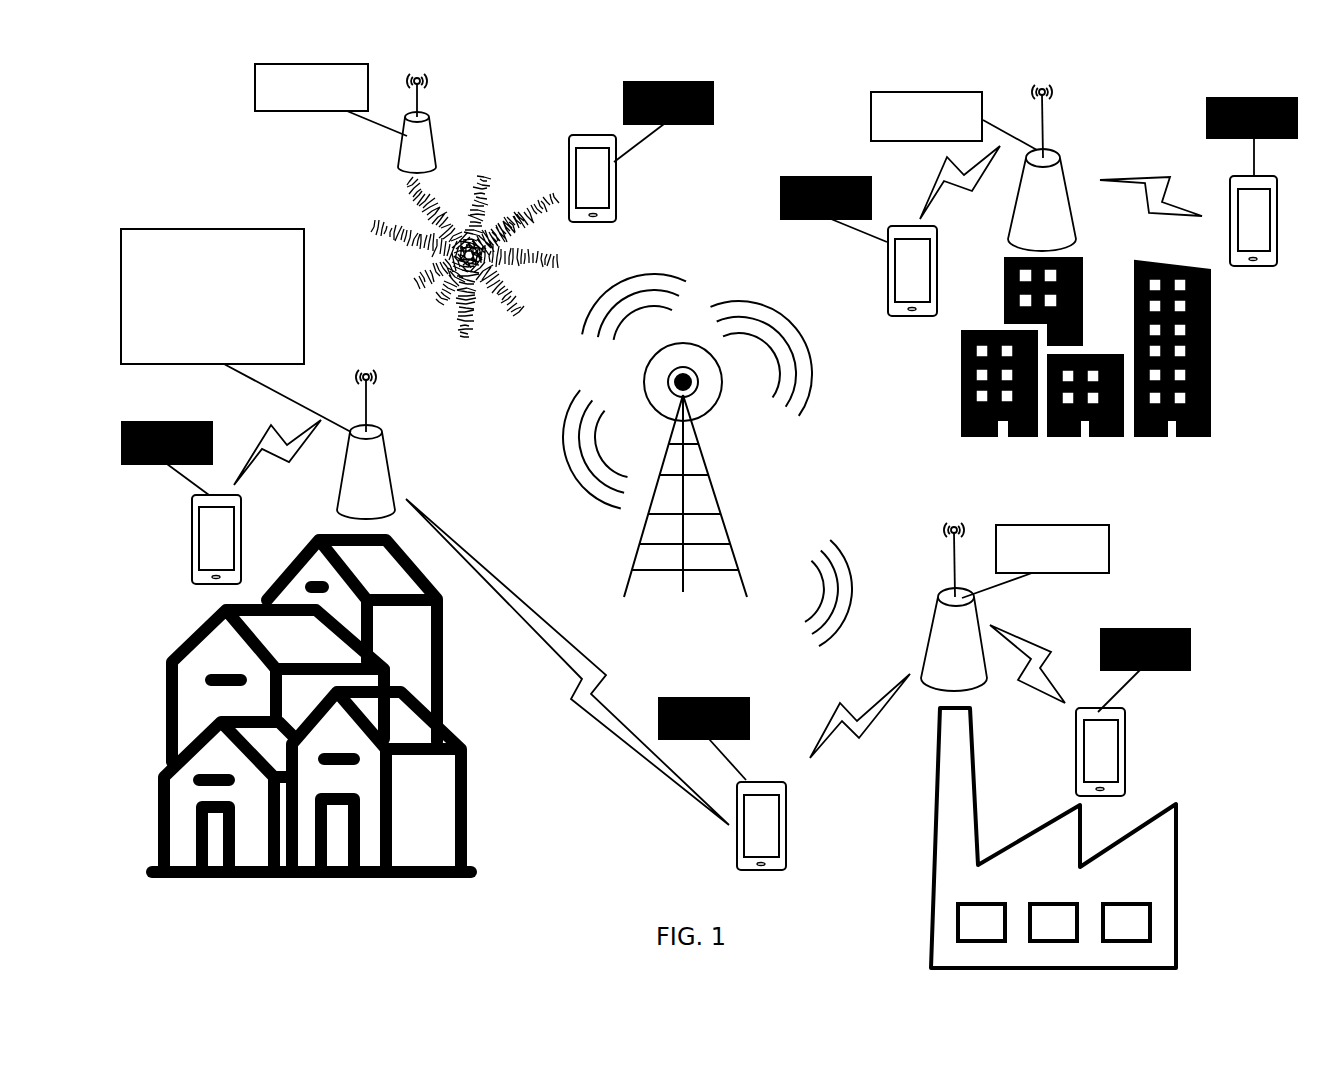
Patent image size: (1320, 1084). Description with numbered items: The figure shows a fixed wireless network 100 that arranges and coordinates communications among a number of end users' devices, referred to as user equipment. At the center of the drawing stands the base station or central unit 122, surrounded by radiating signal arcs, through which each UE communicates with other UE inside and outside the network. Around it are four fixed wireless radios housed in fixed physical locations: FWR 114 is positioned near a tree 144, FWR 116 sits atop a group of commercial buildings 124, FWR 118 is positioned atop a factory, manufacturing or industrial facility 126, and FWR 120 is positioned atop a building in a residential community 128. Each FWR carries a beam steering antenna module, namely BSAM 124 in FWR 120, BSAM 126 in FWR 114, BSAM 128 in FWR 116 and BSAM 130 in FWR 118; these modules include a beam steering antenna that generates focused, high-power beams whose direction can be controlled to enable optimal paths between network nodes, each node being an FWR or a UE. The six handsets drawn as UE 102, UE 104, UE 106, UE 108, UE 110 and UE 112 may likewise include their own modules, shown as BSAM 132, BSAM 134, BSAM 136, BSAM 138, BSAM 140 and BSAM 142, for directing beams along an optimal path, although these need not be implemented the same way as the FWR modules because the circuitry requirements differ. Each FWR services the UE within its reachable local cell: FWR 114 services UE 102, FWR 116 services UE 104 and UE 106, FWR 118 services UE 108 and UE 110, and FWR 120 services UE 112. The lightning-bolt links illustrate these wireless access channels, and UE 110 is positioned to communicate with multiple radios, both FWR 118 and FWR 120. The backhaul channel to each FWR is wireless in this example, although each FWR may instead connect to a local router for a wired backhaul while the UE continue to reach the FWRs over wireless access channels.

The fixed wireless network 100 is at (213, 120).
The user equipment 102 is at (572, 133).
The user equipment 104 is at (879, 284).
The user equipment 106 is at (1224, 187).
The user equipment 108 is at (1068, 757).
The user equipment 110 is at (735, 800).
The user equipment 112 is at (195, 532).
The fixed wireless radio 114 is at (425, 137).
The fixed wireless radio 116 is at (1054, 166).
The fixed wireless radio 118 is at (938, 589).
The fixed wireless radio 120 is at (388, 458).
The base station or central unit 122 is at (722, 492).
The beam steering antenna module 124 is at (205, 225).
The beam steering antenna module 126 is at (365, 80).
The beam steering antenna module 128 is at (918, 82).
The beam steering antenna module 130 is at (1103, 534).
The beam steering antenna module 132 is at (683, 80).
The beam steering antenna module 134 is at (825, 175).
The beam steering antenna module 136 is at (1239, 88).
The beam steering antenna module 138 is at (1138, 621).
The beam steering antenna module 140 is at (697, 696).
The beam steering antenna module 142 is at (175, 420).
The tree 144 is at (397, 212).